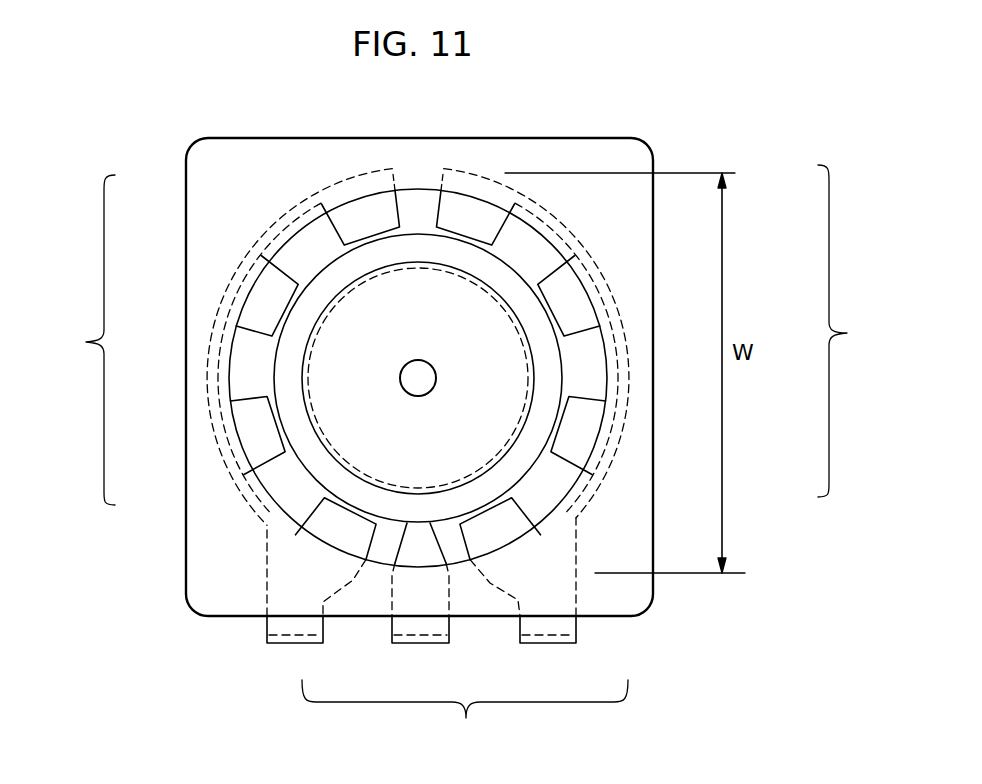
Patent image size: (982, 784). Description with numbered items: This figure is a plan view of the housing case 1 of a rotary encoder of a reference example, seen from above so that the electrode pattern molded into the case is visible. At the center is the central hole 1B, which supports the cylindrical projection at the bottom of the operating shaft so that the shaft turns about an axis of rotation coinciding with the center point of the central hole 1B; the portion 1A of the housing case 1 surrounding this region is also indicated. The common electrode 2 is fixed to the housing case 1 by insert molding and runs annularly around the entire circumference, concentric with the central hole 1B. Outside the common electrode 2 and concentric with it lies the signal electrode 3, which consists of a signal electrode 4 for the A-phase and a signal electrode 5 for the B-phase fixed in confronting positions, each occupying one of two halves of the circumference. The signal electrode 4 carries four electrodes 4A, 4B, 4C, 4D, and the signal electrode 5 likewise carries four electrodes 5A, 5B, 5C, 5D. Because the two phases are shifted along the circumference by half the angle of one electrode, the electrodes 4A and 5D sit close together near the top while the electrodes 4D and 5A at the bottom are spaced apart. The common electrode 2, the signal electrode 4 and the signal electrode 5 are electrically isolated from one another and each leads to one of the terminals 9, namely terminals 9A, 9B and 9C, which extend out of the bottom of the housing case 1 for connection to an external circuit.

The housing case 1 is at (409, 150).
The stator outer yoke portion 1A is at (428, 200).
The central hole 1B is at (416, 374).
The common electrode 2 is at (383, 508).
The signal electrode 3 is at (463, 335).
The signal electrode for A-phase 4 is at (42, 355).
The electrode 4A is at (347, 227).
The electrode 4B is at (267, 302).
The electrode 4C is at (248, 422).
The electrode 4D is at (320, 525).
The signal electrode for B-phase 5 is at (866, 345).
The electrode 5A is at (525, 522).
The electrode 5B is at (600, 422).
The electrode 5C is at (583, 298).
The electrode 5D is at (487, 217).
The terminals 9 is at (447, 636).
The terminal 9A is at (297, 632).
The terminal 9B is at (545, 628).
The terminal 9C is at (413, 626).